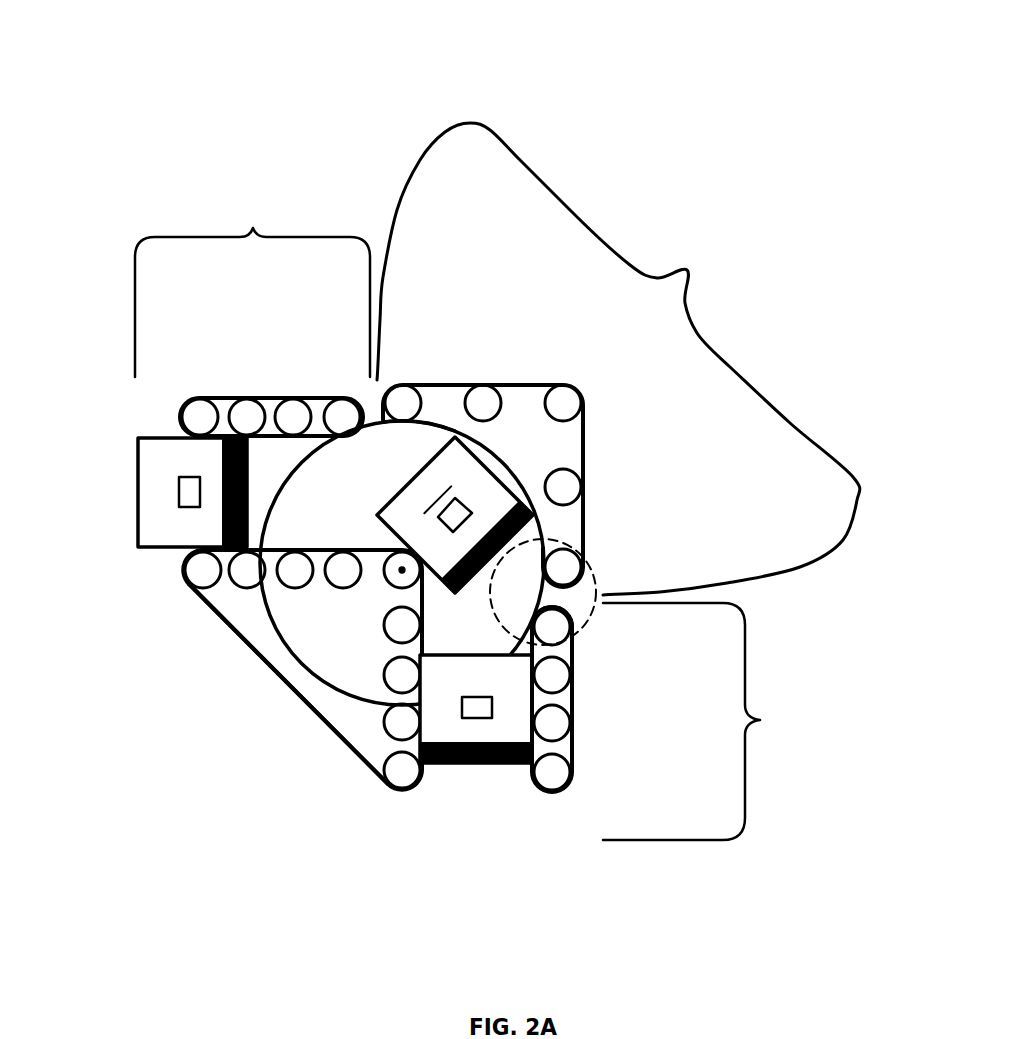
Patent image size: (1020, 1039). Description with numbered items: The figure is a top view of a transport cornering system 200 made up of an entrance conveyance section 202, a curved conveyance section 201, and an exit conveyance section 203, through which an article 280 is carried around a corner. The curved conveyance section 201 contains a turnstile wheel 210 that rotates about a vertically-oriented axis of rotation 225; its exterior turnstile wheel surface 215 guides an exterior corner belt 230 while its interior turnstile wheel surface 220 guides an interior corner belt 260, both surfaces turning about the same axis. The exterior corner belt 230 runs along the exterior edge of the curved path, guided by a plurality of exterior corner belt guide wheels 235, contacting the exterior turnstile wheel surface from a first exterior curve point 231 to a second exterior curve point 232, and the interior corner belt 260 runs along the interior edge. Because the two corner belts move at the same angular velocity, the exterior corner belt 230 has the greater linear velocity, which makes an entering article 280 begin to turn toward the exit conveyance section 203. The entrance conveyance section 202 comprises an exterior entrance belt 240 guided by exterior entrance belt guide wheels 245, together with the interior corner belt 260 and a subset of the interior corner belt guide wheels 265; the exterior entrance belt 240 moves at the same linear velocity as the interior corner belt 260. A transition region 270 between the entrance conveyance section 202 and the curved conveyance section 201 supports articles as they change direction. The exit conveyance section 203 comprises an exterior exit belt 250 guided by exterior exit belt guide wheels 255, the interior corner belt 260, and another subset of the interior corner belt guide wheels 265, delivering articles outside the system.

The transport cornering system 200 is at (90, 84).
The curved conveyance section 201 is at (687, 275).
The entrance conveyance section 202 is at (760, 720).
The exit conveyance section 203 is at (253, 222).
The turnstile wheel 210 is at (362, 397).
The exterior turnstile wheel surface 215 is at (296, 486).
The interior turnstile wheel surface 220 is at (398, 582).
The axis of rotation 225 is at (400, 571).
The exterior corner belt 230 is at (583, 448).
The first exterior curve point 231 is at (481, 584).
The second exterior curve point 232 is at (399, 428).
The exterior corner belt guide wheels 235 is at (450, 383).
The exterior entrance belt 240 is at (570, 707).
The exterior entrance belt guide wheels 245 is at (565, 652).
The exterior exit belt 250 is at (273, 397).
The exterior exit belt guide wheels 255 is at (230, 397).
The interior corner belt 260 is at (253, 652).
The interior corner belt guide wheels 265 is at (318, 582).
The transition region 270 is at (573, 637).
The article 280 is at (137, 478).